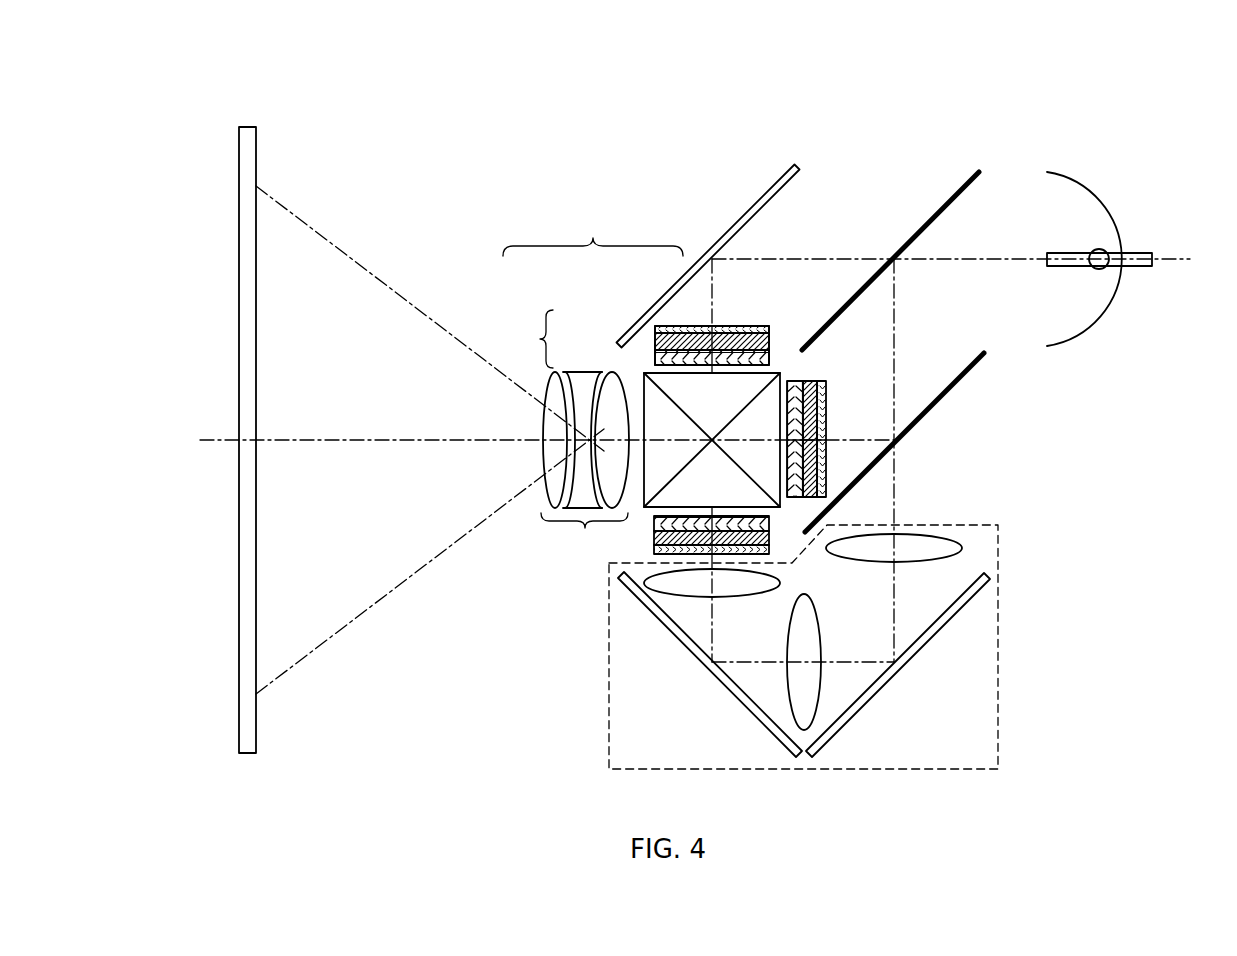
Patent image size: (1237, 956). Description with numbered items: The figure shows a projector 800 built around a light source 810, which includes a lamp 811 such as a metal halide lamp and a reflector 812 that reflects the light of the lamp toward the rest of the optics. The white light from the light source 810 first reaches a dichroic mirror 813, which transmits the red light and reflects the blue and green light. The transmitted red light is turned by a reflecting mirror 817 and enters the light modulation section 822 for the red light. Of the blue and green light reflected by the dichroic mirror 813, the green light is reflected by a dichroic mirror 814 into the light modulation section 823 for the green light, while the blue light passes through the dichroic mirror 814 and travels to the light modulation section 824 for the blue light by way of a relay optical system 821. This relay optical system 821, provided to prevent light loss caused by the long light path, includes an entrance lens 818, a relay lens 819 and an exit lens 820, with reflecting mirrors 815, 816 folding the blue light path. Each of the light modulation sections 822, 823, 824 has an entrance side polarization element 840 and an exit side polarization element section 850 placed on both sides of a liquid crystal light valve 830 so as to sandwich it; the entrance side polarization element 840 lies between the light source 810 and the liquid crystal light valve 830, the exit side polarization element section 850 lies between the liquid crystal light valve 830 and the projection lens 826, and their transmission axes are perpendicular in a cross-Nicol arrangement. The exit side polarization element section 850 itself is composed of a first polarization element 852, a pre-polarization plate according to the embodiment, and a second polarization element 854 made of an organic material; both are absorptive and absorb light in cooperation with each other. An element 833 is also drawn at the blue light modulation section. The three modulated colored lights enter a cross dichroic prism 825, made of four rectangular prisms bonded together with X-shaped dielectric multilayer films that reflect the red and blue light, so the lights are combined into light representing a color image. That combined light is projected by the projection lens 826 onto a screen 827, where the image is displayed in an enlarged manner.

The projector 800 is at (1023, 123).
The light source 810 is at (1110, 228).
The lamp 811 is at (1092, 250).
The reflector 812 is at (1105, 203).
The dichroic mirror 813 is at (948, 200).
The dichroic mirror 814 is at (952, 380).
The reflecting mirror 815 is at (878, 692).
The reflecting mirror 816 is at (727, 692).
The reflecting mirror 817 is at (766, 192).
The entrance lens 818 is at (930, 545).
The relay lens 819 is at (812, 622).
The exit lens 820 is at (745, 590).
The relay optical system 821 is at (1000, 666).
The light modulation section 822 is at (593, 234).
The light modulation section 823 is at (833, 376).
The light modulation section 824 is at (646, 543).
The cross dichroic prism 825 is at (776, 372).
The projection lens 826 is at (585, 463).
The screen 827 is at (252, 126).
The liquid crystal light valve 830 is at (648, 332).
The polarizing plate 833 is at (769, 538).
The entrance side polarization element 840 is at (665, 328).
The exit side polarization element section 850 is at (540, 339).
The first polarization element 852 is at (648, 340).
The second polarization element 854 is at (654, 358).